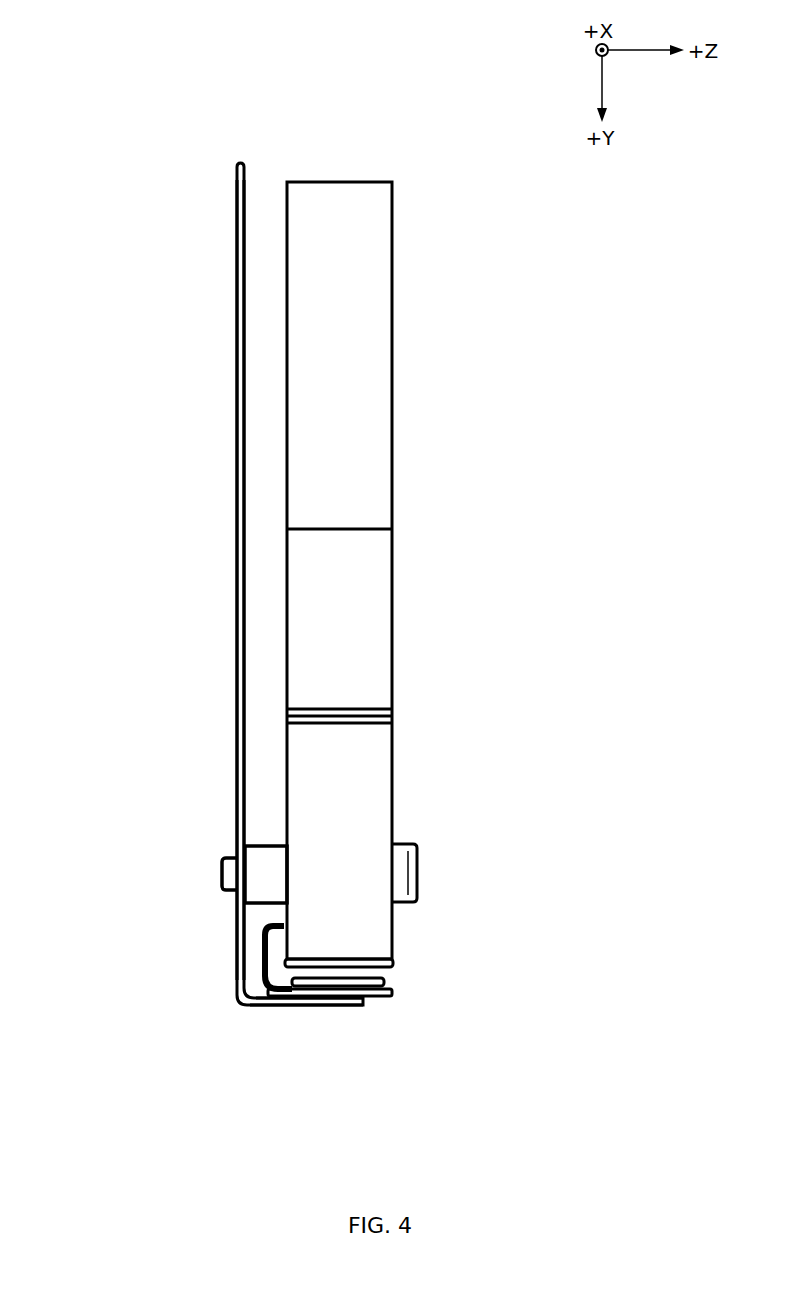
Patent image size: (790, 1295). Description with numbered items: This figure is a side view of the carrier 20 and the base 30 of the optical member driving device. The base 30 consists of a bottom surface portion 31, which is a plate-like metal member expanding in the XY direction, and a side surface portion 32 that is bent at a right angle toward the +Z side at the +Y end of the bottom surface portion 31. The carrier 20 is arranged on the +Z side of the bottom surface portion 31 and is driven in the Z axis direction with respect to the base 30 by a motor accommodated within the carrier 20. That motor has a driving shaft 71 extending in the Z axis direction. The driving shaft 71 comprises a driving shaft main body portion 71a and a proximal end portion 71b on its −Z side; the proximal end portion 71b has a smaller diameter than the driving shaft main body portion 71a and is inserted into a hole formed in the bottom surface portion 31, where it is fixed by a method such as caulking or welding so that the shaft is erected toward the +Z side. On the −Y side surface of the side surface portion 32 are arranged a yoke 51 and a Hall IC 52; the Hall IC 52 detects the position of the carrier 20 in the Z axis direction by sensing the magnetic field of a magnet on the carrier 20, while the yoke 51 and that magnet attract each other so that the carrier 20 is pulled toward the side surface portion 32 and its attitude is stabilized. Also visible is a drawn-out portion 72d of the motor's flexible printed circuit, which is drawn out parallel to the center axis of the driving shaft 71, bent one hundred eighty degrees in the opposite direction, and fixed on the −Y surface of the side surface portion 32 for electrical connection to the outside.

The carrier 20 is at (398, 174).
The base 30 is at (233, 156).
The bottom surface portion 31 is at (237, 550).
The side surface portion 32 is at (330, 1007).
The driving shaft 71 is at (92, 803).
The driving shaft main body portion 71a is at (263, 846).
The proximal end portion 71b is at (222, 875).
The drawn-out portion 72d is at (262, 962).
The yoke 51 is at (393, 995).
The Hall IC 52 is at (385, 982).